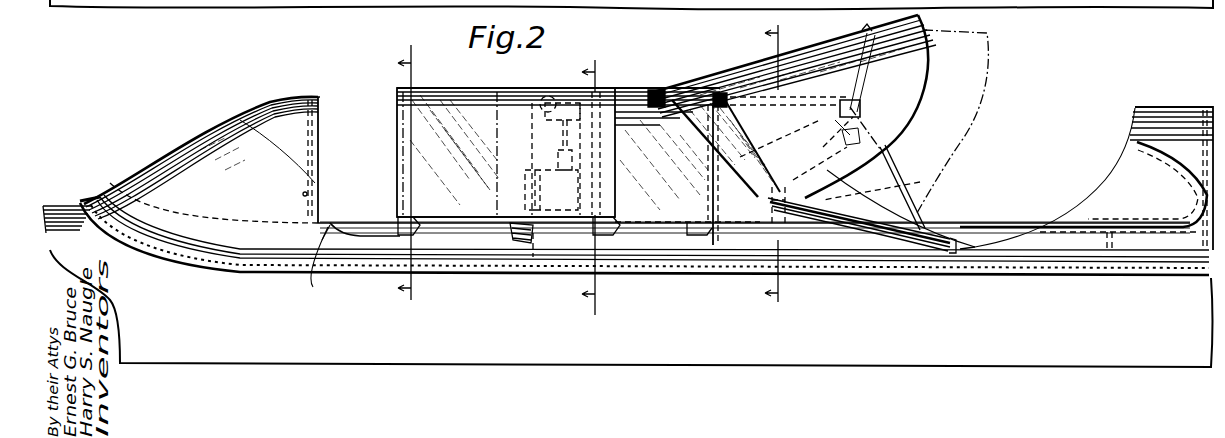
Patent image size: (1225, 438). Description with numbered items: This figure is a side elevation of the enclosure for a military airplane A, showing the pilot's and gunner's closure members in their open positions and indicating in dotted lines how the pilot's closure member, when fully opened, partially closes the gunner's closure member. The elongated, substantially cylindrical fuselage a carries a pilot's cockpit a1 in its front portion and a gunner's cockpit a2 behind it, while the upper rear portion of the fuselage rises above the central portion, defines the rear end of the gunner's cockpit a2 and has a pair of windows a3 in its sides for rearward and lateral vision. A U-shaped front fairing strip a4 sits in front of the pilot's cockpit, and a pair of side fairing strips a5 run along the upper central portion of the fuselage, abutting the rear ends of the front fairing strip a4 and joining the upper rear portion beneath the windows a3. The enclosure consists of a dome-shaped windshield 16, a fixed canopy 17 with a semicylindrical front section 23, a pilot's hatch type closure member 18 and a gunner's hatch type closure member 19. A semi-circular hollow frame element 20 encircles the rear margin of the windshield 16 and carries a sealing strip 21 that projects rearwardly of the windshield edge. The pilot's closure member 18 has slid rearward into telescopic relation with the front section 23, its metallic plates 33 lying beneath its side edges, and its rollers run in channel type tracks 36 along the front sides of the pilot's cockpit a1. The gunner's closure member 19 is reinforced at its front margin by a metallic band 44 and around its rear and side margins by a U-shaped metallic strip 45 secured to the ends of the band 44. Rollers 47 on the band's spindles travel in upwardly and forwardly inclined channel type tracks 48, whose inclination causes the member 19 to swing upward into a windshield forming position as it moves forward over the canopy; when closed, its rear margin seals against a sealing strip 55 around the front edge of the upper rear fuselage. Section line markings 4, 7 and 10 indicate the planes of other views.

The military airplane A is at (280, 8).
The fuselage a is at (1078, 8).
The pilot's cockpit a1 is at (341, 128).
The gunner's cockpit a2 is at (987, 213).
The windows a3 is at (1083, 197).
The front fairing strip a4 is at (117, 196).
The side fairing strips a5 is at (668, 258).
The windshield 16 is at (216, 116).
The canopy 17 is at (660, 172).
The pilot's hatch type closure member 18 is at (468, 92).
The gunner's hatch type closure member 19 is at (760, 59).
The frame element 20 is at (313, 196).
The sealing strip 21 is at (320, 181).
The front section of canopy 23 is at (630, 97).
The metallic plates 33 is at (483, 220).
The channel type tracks 36 is at (370, 227).
The metallic band 44 is at (805, 152).
The metallic strip 45 is at (920, 120).
The rollers 47 is at (780, 205).
The channel type tracks 48 is at (925, 222).
The sealing strip 55 is at (1138, 107).
The section line 4 is at (418, 172).
The section line 7 is at (600, 187).
The section line 10 is at (788, 164).